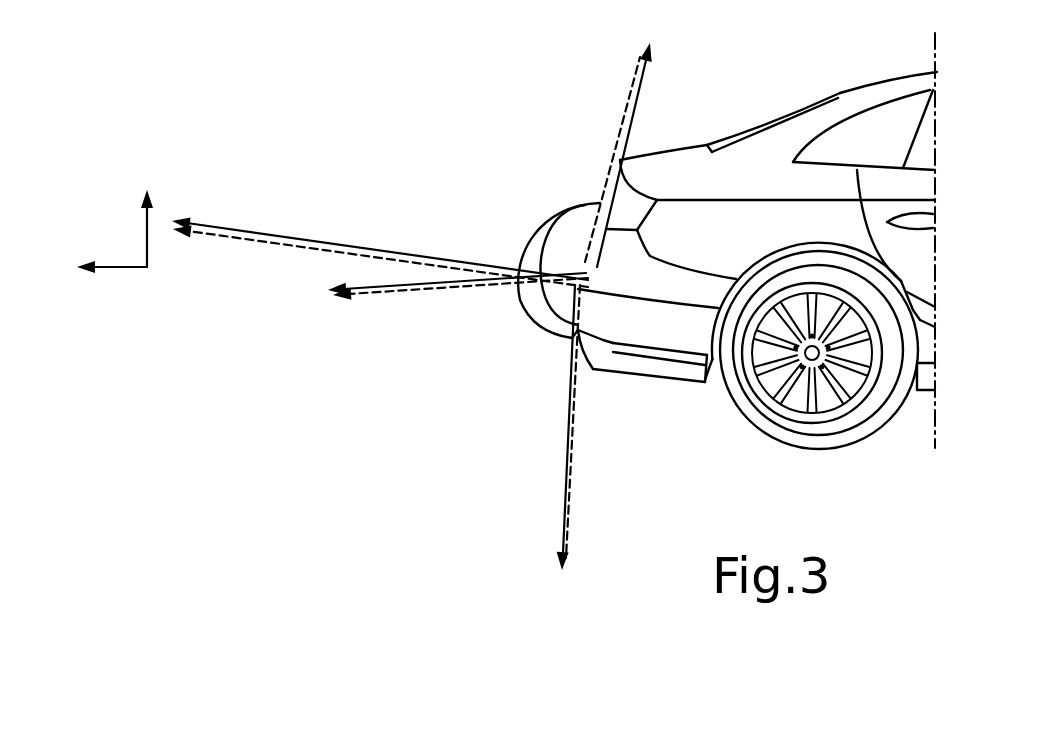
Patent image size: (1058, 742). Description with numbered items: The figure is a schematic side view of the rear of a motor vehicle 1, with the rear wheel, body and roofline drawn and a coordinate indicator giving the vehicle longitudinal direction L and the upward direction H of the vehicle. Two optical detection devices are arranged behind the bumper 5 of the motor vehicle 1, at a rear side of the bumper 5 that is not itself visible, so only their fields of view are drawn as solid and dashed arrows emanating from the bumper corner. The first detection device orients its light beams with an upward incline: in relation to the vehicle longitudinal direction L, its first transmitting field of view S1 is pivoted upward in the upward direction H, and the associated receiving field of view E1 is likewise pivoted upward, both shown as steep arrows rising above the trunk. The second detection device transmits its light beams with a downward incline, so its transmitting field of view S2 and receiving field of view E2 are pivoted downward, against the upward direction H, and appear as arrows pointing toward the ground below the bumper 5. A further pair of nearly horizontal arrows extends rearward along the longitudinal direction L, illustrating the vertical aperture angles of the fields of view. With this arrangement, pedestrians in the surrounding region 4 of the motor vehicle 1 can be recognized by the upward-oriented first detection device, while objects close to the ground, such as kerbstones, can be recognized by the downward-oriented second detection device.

The motor vehicle 1 is at (850, 91).
The surrounding region 4 is at (683, 129).
The bumper 5 is at (607, 352).
The first transmitting field of view S1 is at (635, 83).
The receiving field of view E1 is at (646, 80).
The transmitting field of view S2 is at (569, 494).
The receiving field of view E2 is at (557, 514).
The upward direction of the vehicle H is at (143, 208).
The vehicle longitudinal direction L is at (103, 272).